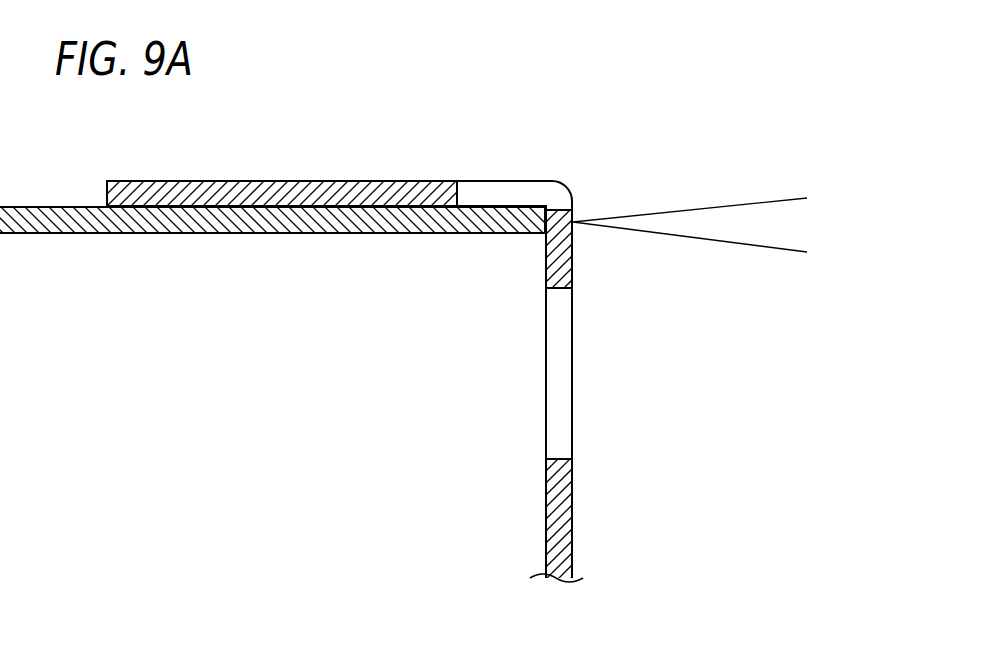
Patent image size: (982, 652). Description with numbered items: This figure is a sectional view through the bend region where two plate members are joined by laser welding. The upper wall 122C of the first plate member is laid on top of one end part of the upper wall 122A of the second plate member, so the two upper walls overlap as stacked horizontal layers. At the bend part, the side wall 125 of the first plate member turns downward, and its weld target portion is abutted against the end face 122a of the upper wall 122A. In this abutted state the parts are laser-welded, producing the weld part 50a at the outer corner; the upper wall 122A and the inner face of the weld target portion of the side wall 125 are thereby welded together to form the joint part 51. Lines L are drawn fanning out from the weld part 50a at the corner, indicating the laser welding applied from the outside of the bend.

The upper wall 122C is at (138, 180).
The upper wall 122A is at (128, 234).
The joint part 51 is at (567, 193).
The weld part 50a is at (573, 222).
The light beam L is at (662, 235).
The end face 122a is at (547, 232).
The side wall 125 is at (558, 515).